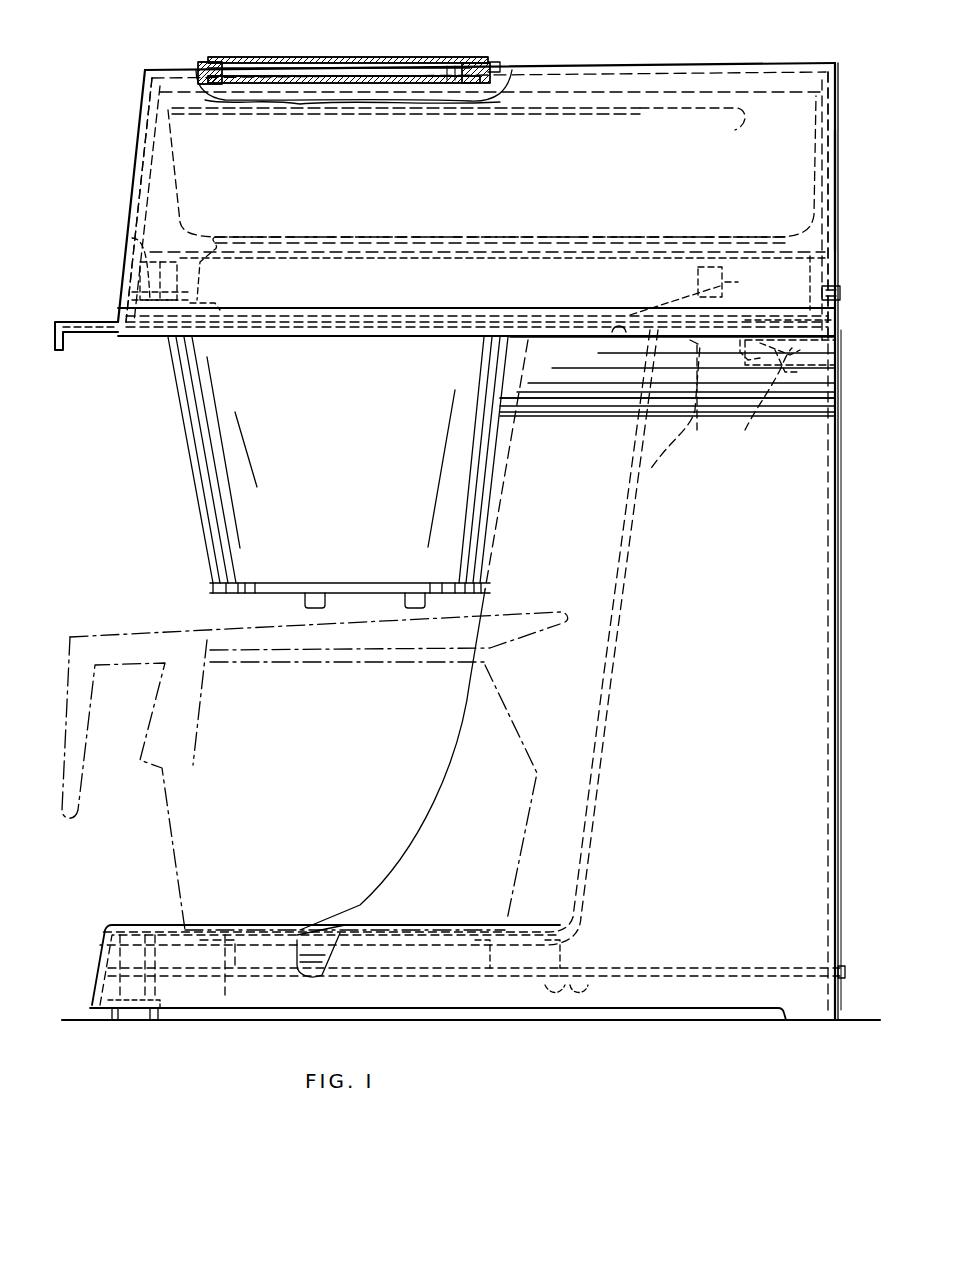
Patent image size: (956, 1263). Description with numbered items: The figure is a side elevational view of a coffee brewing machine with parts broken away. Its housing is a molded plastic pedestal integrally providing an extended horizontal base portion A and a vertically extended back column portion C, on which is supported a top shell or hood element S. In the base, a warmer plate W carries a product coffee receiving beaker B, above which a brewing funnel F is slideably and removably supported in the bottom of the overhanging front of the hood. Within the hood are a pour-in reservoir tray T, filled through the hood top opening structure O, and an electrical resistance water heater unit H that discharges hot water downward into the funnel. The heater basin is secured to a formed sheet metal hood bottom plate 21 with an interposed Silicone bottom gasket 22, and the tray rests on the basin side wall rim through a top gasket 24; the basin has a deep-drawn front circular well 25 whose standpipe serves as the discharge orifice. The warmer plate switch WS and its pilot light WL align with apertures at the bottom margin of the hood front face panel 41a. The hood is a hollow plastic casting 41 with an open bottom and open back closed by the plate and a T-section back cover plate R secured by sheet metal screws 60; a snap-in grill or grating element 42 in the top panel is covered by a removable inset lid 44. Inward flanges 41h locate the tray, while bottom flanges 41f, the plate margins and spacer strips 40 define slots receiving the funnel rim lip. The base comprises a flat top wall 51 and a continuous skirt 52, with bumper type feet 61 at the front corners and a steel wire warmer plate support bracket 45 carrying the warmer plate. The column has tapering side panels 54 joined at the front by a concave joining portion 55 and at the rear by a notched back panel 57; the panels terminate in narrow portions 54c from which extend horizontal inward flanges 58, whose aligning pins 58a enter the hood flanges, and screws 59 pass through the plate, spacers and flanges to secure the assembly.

The top shell or hood element S is at (796, 66).
The back column portion C is at (851, 594).
The pour-in reservoir tray T is at (160, 132).
The water heater unit H is at (556, 246).
The back cover plate R is at (835, 202).
The brewing funnel F is at (186, 440).
The product coffee receiving beaker B is at (210, 632).
The horizontal base portion A is at (122, 928).
The warmer plate W is at (320, 925).
The pour-in opening structure O is at (278, 58).
The warmer plate switch WS is at (140, 262).
The pilot light WL is at (130, 296).
The hood bottom plate 21 is at (130, 238).
The bottom gasket 22 is at (215, 308).
The top gasket 24 is at (218, 235).
The front circular well 25 is at (300, 308).
The spacer strips 40 is at (104, 342).
The hollow plastic casting 41 is at (784, 128).
The front face panel 41a is at (132, 174).
The horizontal longitudinal inward flanges 41h is at (692, 127).
The bottom flanges 41f is at (698, 416).
The grill or grating element 42 is at (470, 62).
The inset lid 44 is at (410, 60).
The warmer plate support bracket 45 is at (648, 968).
The flat top wall 51 is at (165, 925).
The skirt 52 is at (485, 1000).
The side panels 54 is at (738, 674).
The narrow portions 54c is at (594, 392).
The joining portion 55 is at (602, 728).
The back panel 57 is at (845, 738).
The inward flanges 58 is at (838, 378).
The aligning pins 58a is at (618, 325).
The screws 59 is at (740, 424).
The sheet metal screws 60 is at (838, 295).
The bumper type feet 61 is at (162, 1018).